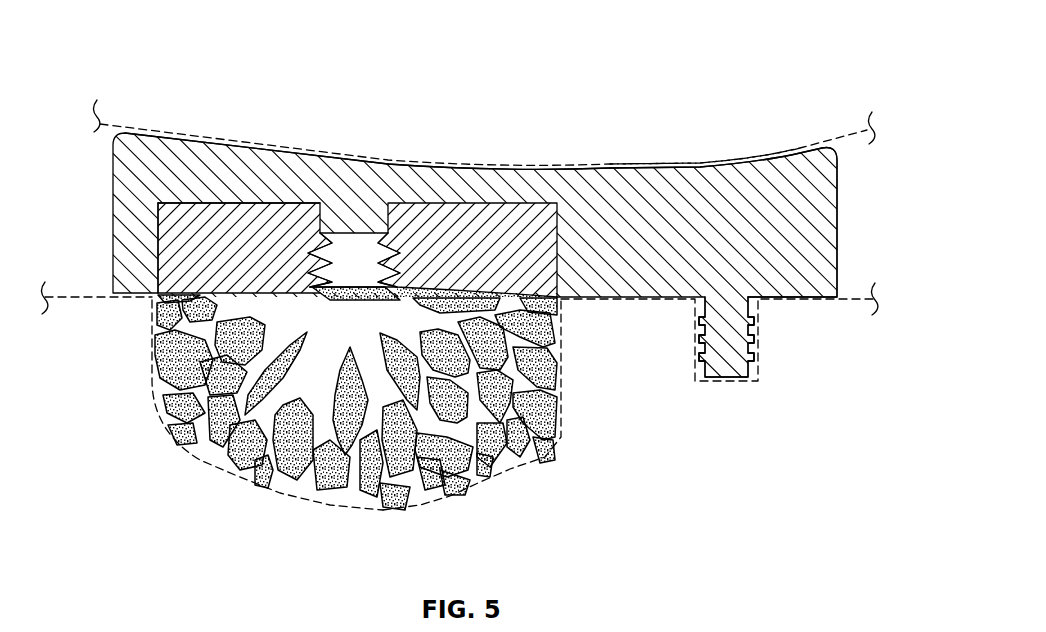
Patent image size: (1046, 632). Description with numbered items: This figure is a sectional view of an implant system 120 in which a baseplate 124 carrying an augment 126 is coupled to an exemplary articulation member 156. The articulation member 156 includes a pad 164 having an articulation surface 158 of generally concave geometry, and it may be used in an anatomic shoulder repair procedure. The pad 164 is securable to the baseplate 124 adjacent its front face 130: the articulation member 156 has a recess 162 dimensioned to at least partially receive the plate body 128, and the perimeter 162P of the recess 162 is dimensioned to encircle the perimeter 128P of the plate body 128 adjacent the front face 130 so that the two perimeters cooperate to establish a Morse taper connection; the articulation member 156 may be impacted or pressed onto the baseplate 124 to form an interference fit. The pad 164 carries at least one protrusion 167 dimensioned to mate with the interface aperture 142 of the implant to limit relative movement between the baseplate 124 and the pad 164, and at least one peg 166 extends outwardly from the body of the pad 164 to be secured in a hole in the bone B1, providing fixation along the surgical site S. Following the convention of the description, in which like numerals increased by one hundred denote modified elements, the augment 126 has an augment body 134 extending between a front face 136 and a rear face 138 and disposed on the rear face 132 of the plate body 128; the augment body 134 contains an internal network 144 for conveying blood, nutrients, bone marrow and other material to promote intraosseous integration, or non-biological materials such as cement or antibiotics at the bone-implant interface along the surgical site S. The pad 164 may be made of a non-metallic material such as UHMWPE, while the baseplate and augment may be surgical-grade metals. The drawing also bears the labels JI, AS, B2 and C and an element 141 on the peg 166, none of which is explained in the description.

The orthopedic implant assembly 120 is at (148, 33).
The baseplate 124 is at (157, 207).
The porous structure 126 is at (345, 434).
The plate body 128 is at (185, 263).
The perimeter of plate body 128P is at (167, 227).
The front face 130 is at (195, 203).
The pore 132 is at (170, 318).
The lateral boundary of porous structure 134 is at (560, 395).
The second insert member 136 is at (538, 294).
The bottom surface of porous structure 138 is at (393, 513).
The threads of tab 141 is at (747, 348).
The interface aperture 142 is at (380, 213).
The porous region 144 is at (338, 434).
The articulation member 156 is at (169, 134).
The articulation surface 158 is at (263, 150).
The recess 162 is at (288, 194).
The perimeter of recess 162P is at (288, 194).
The pad 164 is at (820, 187).
The peg 166 is at (732, 377).
The protrusion 167 is at (368, 223).
The joint interface JI is at (610, 167).
The articular surface AS is at (742, 163).
The surgical site S is at (715, 60).
The bone B1 is at (833, 322).
The second bone boundary B2 is at (787, 128).
The cavity contour C is at (240, 473).